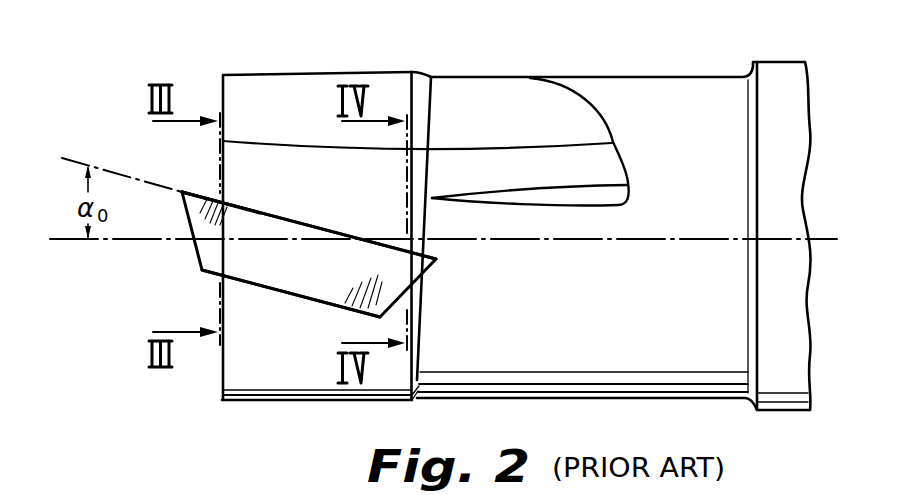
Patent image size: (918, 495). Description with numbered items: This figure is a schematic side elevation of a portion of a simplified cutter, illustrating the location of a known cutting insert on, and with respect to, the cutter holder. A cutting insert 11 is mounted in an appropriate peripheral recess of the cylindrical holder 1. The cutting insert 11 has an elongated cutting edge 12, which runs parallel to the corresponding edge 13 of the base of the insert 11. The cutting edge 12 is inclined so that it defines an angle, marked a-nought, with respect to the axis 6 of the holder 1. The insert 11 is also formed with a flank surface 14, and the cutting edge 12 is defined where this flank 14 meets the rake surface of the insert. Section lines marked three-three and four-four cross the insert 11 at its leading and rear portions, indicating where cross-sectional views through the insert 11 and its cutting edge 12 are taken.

The cylindrical holder 1 is at (468, 62).
The axis 6 is at (668, 237).
The cutting insert 11 is at (328, 218).
The cutting edge 12 is at (252, 211).
The edge of the base of the insert 13 is at (280, 292).
The flank surface 14 is at (324, 281).